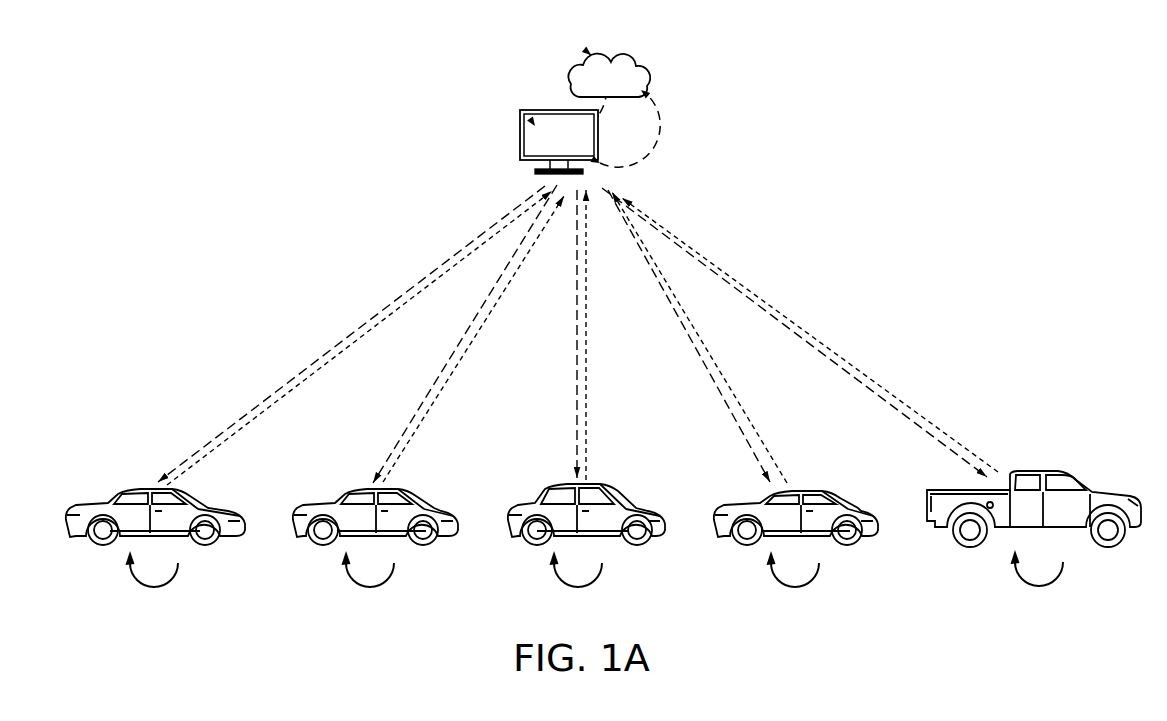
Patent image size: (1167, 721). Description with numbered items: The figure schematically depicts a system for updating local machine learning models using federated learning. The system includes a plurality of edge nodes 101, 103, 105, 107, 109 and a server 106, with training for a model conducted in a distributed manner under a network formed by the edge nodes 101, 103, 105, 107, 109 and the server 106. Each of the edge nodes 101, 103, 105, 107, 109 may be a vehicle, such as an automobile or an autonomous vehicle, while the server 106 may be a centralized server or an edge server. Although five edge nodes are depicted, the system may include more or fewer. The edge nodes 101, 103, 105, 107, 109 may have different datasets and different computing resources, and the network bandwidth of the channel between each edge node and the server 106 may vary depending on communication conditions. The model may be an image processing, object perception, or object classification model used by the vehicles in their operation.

The edge node 101 is at (82, 539).
The edge node 103 is at (300, 539).
The edge node 105 is at (517, 539).
The edge node 107 is at (725, 539).
The edge node 109 is at (932, 529).
The server 106 is at (627, 62).